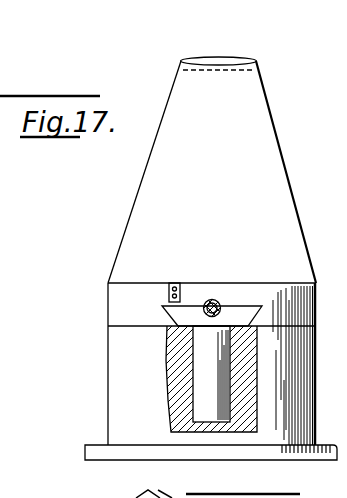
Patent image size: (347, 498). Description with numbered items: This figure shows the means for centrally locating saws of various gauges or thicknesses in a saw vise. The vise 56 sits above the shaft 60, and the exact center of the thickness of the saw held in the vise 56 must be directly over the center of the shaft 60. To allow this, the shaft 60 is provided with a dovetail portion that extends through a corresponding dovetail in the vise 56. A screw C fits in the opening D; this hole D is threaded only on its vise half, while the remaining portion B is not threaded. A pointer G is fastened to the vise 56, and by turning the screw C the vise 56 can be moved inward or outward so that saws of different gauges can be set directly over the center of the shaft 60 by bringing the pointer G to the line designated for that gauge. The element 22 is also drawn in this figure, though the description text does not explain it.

The hopper 56 is at (258, 112).
The frame 22 is at (168, 330).
The socket 60 is at (210, 395).
The plate B is at (243, 313).
The ball C is at (211, 299).
The pivot D is at (219, 300).
The bracket G is at (177, 282).